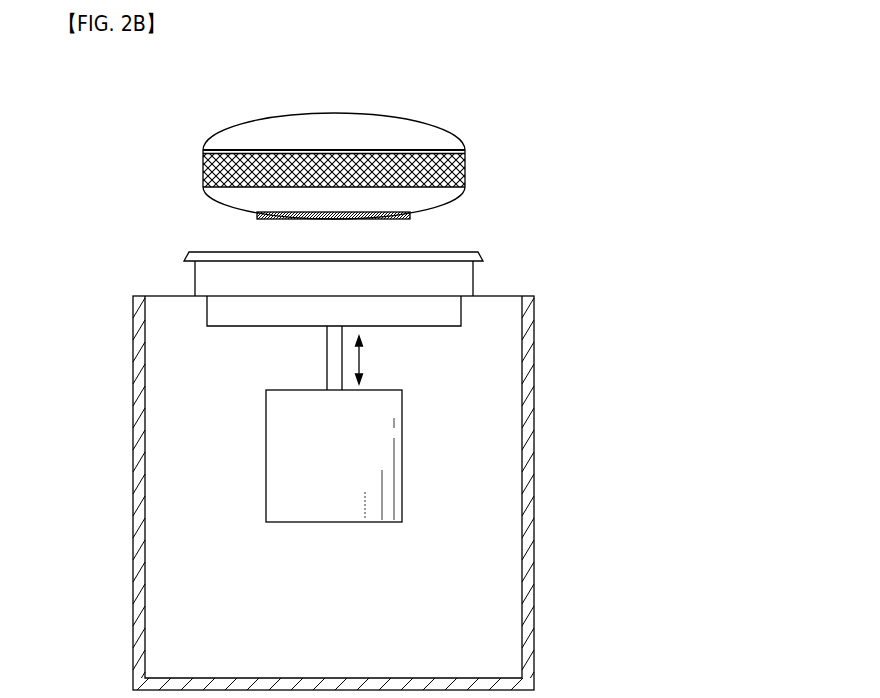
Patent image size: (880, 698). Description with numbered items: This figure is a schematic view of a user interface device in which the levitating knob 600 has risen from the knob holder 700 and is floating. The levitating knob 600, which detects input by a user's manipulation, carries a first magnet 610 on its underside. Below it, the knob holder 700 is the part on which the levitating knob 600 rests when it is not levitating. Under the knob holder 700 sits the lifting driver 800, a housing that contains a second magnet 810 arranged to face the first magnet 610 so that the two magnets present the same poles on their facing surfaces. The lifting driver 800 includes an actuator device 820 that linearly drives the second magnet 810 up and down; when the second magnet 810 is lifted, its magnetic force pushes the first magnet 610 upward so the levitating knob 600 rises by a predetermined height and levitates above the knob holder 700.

The levitating knob 600 is at (447, 146).
The first magnet 610 is at (410, 215).
The knob holder 700 is at (470, 272).
The lifting driver 800 is at (525, 518).
The second magnet 810 is at (452, 317).
The drive unit 820 is at (278, 458).